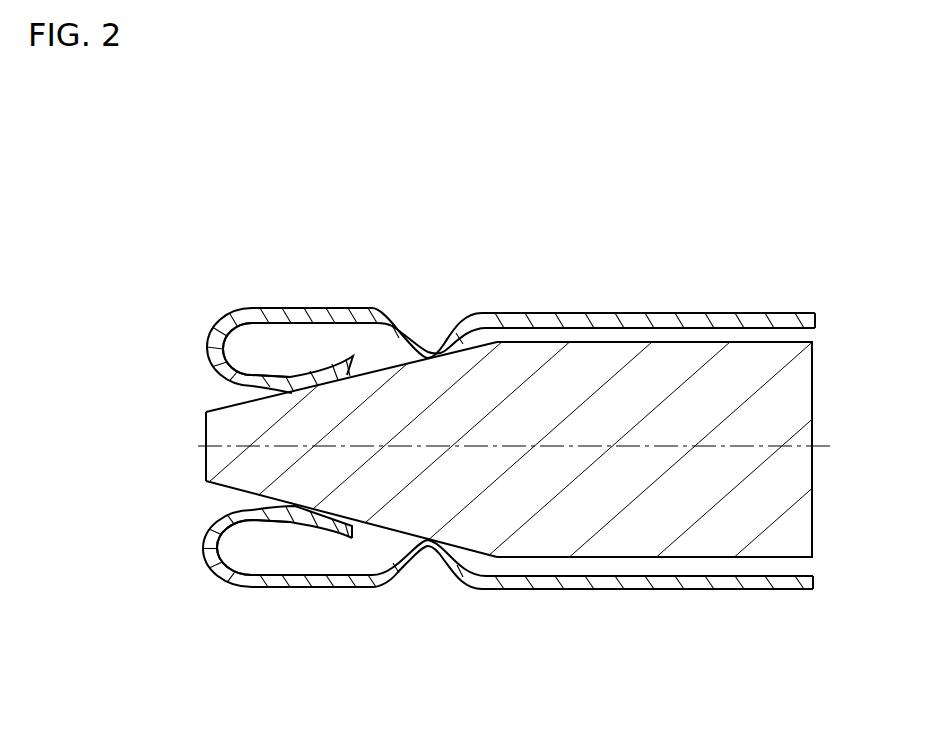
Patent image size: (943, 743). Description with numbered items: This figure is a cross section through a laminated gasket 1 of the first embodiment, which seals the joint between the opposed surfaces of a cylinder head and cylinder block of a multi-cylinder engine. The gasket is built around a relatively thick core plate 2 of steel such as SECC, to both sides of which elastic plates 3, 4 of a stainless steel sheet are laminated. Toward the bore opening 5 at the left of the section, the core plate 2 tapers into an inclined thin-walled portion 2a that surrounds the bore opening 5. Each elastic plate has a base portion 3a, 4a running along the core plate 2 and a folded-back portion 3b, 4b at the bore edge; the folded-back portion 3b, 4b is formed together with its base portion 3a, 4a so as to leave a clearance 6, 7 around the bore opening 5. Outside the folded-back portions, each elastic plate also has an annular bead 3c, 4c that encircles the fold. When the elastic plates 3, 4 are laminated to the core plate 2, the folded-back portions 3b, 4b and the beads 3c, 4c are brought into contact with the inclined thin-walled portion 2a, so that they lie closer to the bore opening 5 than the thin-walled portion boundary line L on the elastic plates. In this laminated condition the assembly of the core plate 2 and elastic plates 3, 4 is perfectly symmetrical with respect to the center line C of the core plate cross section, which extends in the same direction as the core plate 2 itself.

The laminated gasket 1 is at (668, 296).
The core plate 2 is at (797, 400).
The inclined thin-walled portion 2a is at (382, 367).
The elastic plate 3 is at (740, 313).
The base portion 3a is at (342, 308).
The folded-back portion 3b is at (250, 372).
The annular bead 3c is at (430, 345).
The elastic plate 4 is at (710, 590).
The base portion 4a is at (313, 589).
The folded-back portion 4b is at (264, 522).
The annular bead 4c is at (425, 553).
The bore opening 5 is at (133, 472).
The clearance 6 is at (290, 352).
The clearance 7 is at (285, 550).
The thin-walled portion boundary line L is at (508, 332).
The center line C is at (810, 445).